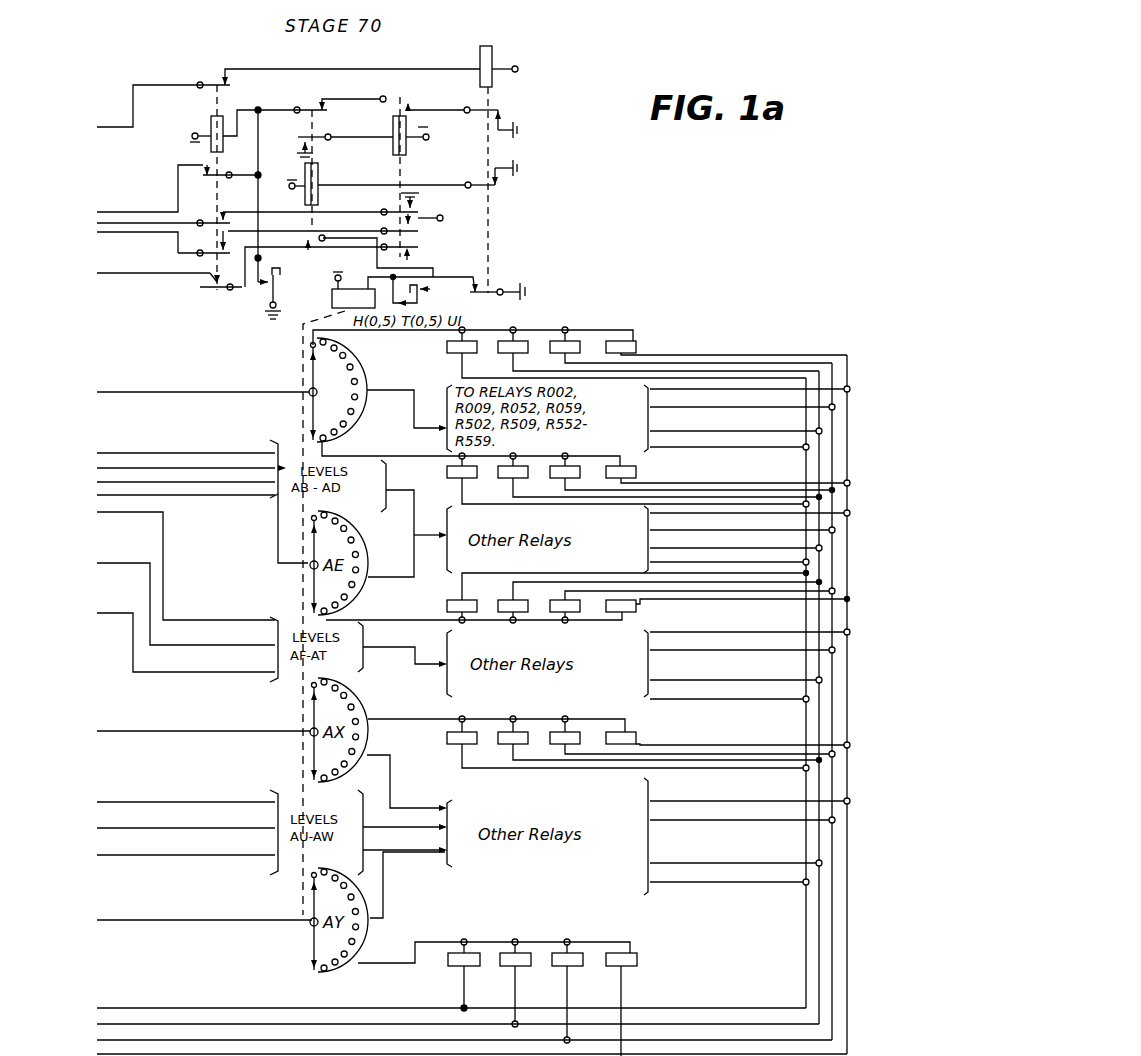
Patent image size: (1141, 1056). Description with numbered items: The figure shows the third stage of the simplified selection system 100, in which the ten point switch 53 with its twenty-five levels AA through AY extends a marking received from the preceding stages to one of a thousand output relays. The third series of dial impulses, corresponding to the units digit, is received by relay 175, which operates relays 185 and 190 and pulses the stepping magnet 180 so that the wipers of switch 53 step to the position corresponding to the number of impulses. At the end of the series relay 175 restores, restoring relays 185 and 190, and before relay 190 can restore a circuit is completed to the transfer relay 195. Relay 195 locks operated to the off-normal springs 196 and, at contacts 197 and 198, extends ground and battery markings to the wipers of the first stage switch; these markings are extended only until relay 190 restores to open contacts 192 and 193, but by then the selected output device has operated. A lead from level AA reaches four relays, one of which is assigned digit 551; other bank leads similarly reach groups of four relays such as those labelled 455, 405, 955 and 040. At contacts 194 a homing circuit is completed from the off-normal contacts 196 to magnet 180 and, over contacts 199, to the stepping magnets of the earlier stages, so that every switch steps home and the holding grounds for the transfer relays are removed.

The selection system 100 is at (533, 227).
The switch 53 is at (297, 380).
The relay 175 is at (498, 52).
The stepping magnet 180 is at (332, 295).
The relay 185 is at (318, 175).
The relay 190 is at (400, 148).
The contacts 192 is at (418, 200).
The contacts 193 is at (400, 222).
The contacts 194 is at (412, 255).
The transfer relay 195 is at (211, 122).
The off-normal springs 196 is at (266, 284).
The contacts 197 is at (220, 216).
The contacts 198 is at (220, 247).
The contacts 199 is at (210, 282).
The digit 551 is at (452, 354).
The relay 455 is at (480, 744).
The relay 405 is at (531, 744).
The relay 955 is at (583, 744).
The relay 040 is at (588, 598).